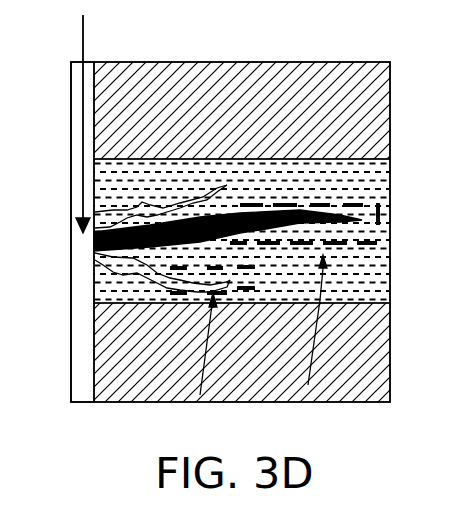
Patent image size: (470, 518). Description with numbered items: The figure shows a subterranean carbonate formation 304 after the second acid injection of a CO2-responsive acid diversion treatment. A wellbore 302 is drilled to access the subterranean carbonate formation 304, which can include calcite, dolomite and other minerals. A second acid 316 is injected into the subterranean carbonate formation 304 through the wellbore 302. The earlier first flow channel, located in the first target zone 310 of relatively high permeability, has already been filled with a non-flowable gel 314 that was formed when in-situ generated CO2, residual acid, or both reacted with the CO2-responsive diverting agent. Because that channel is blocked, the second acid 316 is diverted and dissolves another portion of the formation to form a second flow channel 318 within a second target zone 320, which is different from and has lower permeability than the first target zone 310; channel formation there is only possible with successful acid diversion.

The wellbore 302 is at (80, 380).
The subterranean carbonate formation 304 is at (360, 282).
The first target zone 310 is at (308, 385).
The non-flowable gel 314 is at (300, 217).
The second acid 316 is at (83, 38).
The second flow channel 318 is at (137, 280).
The second target zone 320 is at (200, 395).